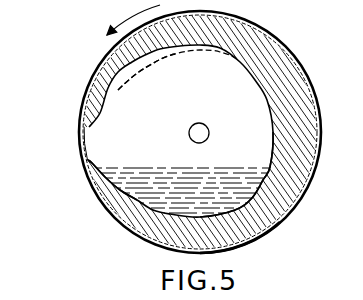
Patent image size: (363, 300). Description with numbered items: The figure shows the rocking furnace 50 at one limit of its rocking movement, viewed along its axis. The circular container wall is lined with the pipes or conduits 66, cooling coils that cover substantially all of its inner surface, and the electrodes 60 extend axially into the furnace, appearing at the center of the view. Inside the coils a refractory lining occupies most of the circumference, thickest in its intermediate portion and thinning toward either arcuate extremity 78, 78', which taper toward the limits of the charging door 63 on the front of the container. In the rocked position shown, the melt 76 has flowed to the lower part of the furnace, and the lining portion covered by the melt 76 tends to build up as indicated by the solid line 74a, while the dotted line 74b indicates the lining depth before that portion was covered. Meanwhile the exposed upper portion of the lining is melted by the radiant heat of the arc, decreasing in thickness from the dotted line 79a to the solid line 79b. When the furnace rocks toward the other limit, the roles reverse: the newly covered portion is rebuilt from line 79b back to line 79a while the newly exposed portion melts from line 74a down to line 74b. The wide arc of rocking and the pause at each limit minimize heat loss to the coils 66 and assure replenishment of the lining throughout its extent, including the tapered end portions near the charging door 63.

The furnace 50 is at (308, 80).
The pipes or conduits 66 is at (287, 53).
The arcuate extremity of lining 78' is at (194, 150).
The arcuate extremity of lining 78 is at (88, 191).
The solid line 74a is at (218, 207).
The dotted line 74b is at (262, 241).
The dotted line 79a is at (205, 50).
The solid line 79b is at (174, 52).
The charging door 63 is at (87, 142).
The electrodes 60 is at (205, 125).
The charge or melt 76 is at (163, 188).